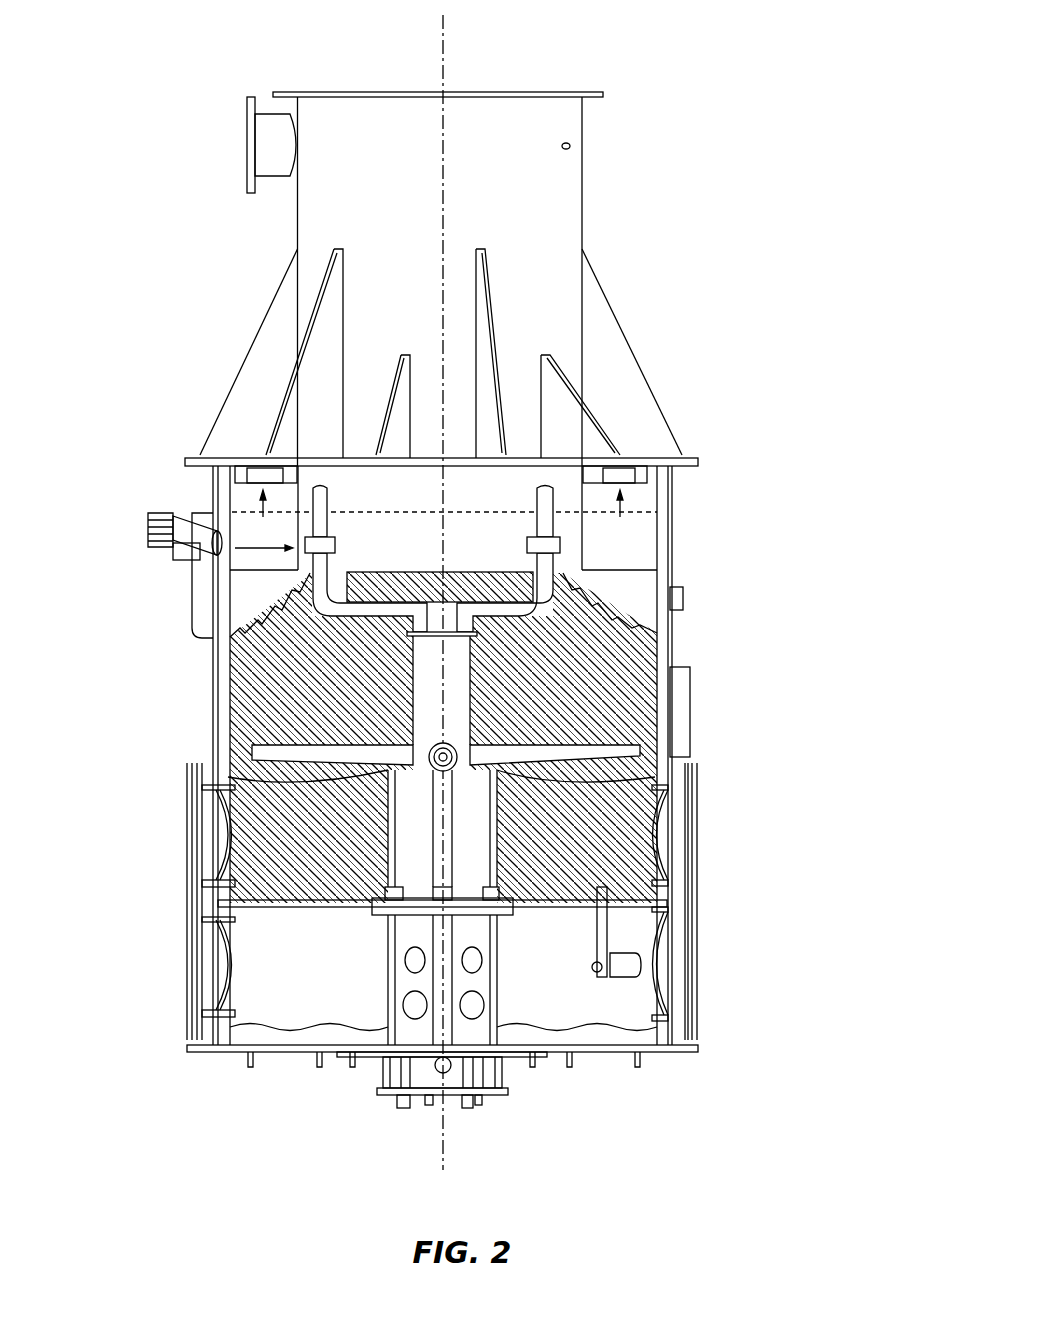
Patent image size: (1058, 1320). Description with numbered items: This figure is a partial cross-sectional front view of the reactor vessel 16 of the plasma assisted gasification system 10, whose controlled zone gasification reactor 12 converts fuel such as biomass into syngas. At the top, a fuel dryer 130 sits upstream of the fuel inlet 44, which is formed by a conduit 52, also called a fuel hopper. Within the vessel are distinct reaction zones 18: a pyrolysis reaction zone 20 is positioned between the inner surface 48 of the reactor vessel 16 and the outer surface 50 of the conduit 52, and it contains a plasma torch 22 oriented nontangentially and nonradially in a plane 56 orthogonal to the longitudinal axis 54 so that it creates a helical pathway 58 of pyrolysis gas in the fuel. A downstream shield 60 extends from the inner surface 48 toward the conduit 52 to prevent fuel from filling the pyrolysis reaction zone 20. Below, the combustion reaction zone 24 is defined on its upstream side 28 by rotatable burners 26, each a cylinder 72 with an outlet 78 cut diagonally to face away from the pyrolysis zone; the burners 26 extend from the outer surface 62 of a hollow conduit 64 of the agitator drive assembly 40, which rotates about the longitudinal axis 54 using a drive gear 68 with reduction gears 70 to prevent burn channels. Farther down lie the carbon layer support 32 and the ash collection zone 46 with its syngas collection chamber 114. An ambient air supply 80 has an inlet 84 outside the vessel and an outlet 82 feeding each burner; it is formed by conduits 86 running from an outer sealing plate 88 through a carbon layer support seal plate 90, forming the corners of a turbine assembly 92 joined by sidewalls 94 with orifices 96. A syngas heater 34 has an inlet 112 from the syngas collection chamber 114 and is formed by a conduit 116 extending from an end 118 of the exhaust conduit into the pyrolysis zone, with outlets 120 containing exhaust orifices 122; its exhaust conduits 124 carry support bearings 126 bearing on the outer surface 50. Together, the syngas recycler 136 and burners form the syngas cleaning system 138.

The plasma assisted gasification system 10 is at (668, 52).
The controlled zone gasification reactor 12 is at (733, 563).
The reactor vessel 16 is at (670, 493).
The reaction zones 18 is at (173, 610).
The pyrolysis reaction zone 20 is at (188, 563).
The plasma torch 22 is at (173, 513).
The combustion reaction zone 24 is at (175, 910).
The rotatable burner 26 is at (265, 727).
The upstream side 28 is at (252, 748).
The carbon layer support 32 is at (637, 913).
The syngas heater 34 is at (320, 490).
The agitator drive assembly 40 is at (520, 735).
The fuel inlet 44 is at (320, 587).
The ash collection zone 46 is at (175, 1000).
The inner surface 48 is at (657, 567).
The outer surface 50 is at (600, 552).
The conduit 52 is at (558, 472).
The longitudinal axis 54 is at (443, 221).
The plane 56 is at (355, 515).
The helical pathway 58 is at (235, 495).
The downstream shield 60 is at (643, 570).
The outer surface 62 is at (413, 690).
The conduit 64 is at (427, 710).
The drive gear 68 is at (373, 1110).
The reduction gears 70 is at (500, 1092).
The cylinder 72 is at (627, 743).
The outlet 78 is at (270, 765).
The ambient air supply 80 is at (523, 840).
The outlet 82 is at (690, 768).
The inlet 84 is at (437, 1040).
The conduit 86 is at (670, 880).
The outer sealing plate 88 is at (500, 1062).
The carbon layer support seal plate 90 is at (670, 910).
The turbine assembly 92 is at (380, 983).
The sidewalls 94 is at (415, 1020).
The orifices 96 is at (478, 1005).
The inlet 112 is at (480, 690).
The syngas collection chamber 114 is at (175, 920).
The conduit 116 is at (483, 510).
The end 118 is at (413, 662).
The outlets 120 is at (262, 483).
The exhaust orifices 122 is at (375, 525).
The exhaust conduit 124 is at (150, 527).
The support bearing 126 is at (590, 545).
The fuel dryer 130 is at (534, 134).
The syngas recycler 136 is at (520, 783).
The syngas cleaning system 138 is at (563, 772).